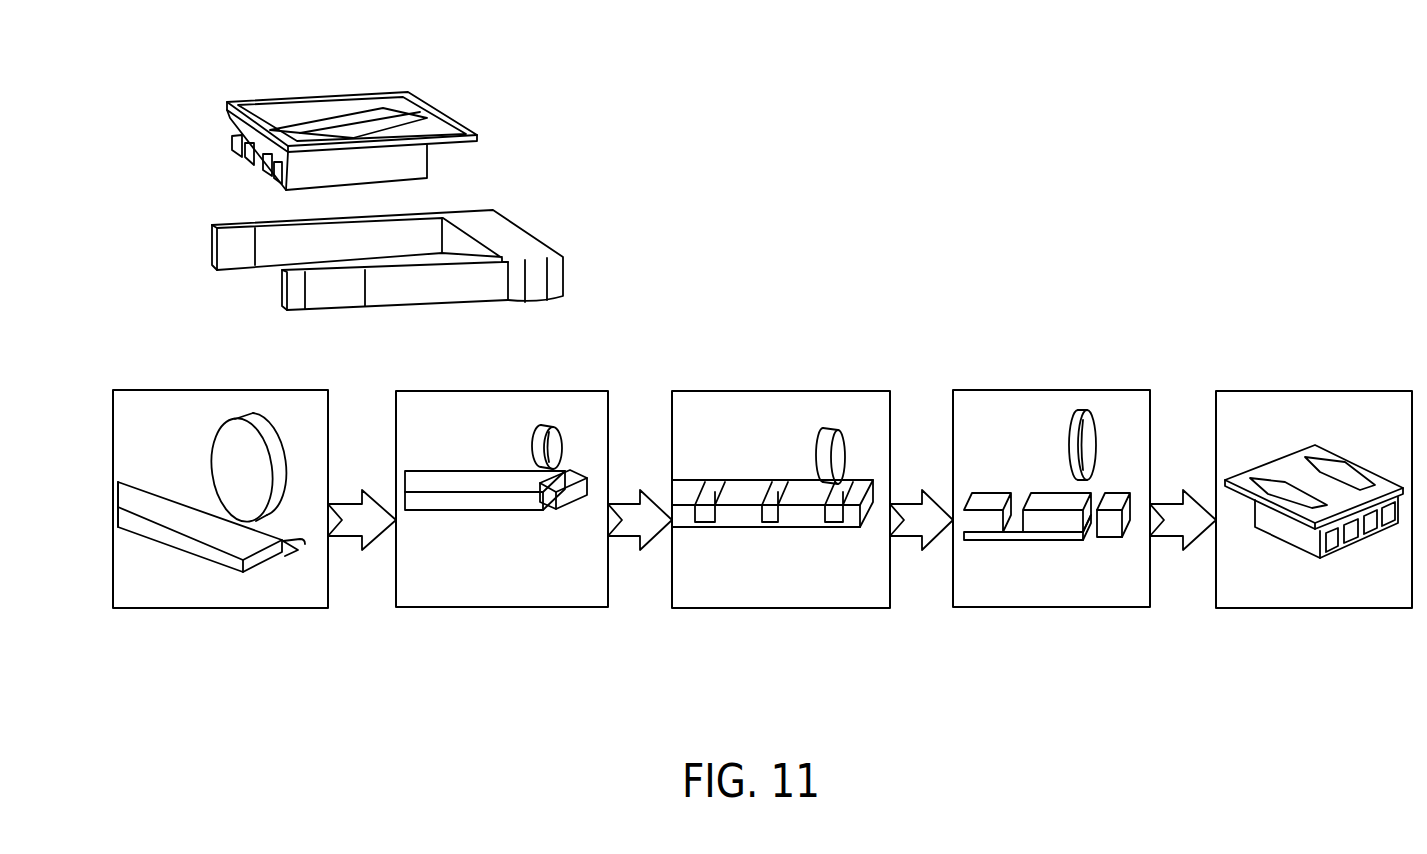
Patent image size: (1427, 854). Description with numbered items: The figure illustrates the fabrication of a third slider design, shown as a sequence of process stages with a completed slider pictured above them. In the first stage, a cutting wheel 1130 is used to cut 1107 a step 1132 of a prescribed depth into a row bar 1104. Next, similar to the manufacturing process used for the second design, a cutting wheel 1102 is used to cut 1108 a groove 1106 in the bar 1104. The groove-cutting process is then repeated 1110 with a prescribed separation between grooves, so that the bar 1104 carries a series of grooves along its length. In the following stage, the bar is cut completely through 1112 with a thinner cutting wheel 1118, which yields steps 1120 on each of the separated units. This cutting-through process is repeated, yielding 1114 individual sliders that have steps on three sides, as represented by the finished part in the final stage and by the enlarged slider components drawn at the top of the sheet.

The cutting wheel 1102 is at (542, 457).
The row bar 1104 is at (215, 556).
The groove 1106 is at (552, 497).
The cutting step 1107 is at (215, 609).
The groove-cutting step 1108 is at (487, 609).
The repeated groove-cutting step 1110 is at (785, 609).
The cut-through step 1112 is at (1025, 609).
The yielding step 1114 is at (1307, 609).
The thinner cutting wheel 1118 is at (1088, 422).
The steps 1120 is at (1088, 540).
The cutting wheel 1130 is at (255, 433).
The step 1132 is at (305, 544).